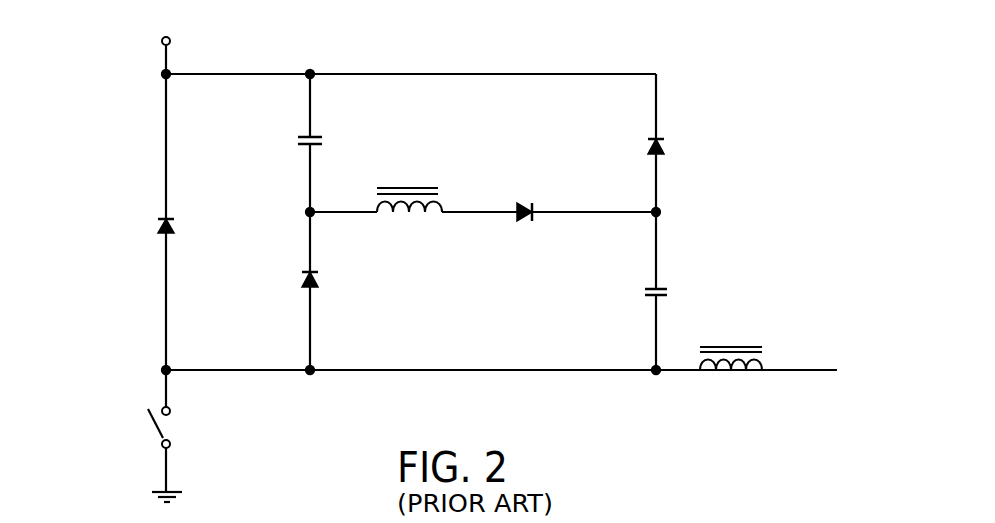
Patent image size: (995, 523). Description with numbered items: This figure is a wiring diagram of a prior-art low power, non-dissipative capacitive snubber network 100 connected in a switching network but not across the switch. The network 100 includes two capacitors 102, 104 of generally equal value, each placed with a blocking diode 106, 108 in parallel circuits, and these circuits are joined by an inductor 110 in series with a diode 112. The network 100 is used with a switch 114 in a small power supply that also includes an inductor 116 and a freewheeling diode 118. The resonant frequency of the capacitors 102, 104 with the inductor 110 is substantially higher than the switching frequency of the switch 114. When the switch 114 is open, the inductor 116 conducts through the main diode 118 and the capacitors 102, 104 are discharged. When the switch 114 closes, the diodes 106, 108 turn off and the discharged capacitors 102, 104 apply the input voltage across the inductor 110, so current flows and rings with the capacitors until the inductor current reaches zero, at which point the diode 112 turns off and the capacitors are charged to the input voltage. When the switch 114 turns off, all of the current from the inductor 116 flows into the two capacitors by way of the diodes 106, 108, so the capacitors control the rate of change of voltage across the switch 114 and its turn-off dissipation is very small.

The snubber network 100 is at (600, 60).
The capacitor 102 is at (322, 141).
The capacitor 104 is at (645, 292).
The blocking diode 106 is at (318, 282).
The blocking diode 108 is at (664, 147).
The inductor 110 is at (398, 218).
The diode 112 is at (527, 203).
The switch 114 is at (153, 427).
The inductor 116 is at (722, 375).
The freewheeling diode 118 is at (175, 227).